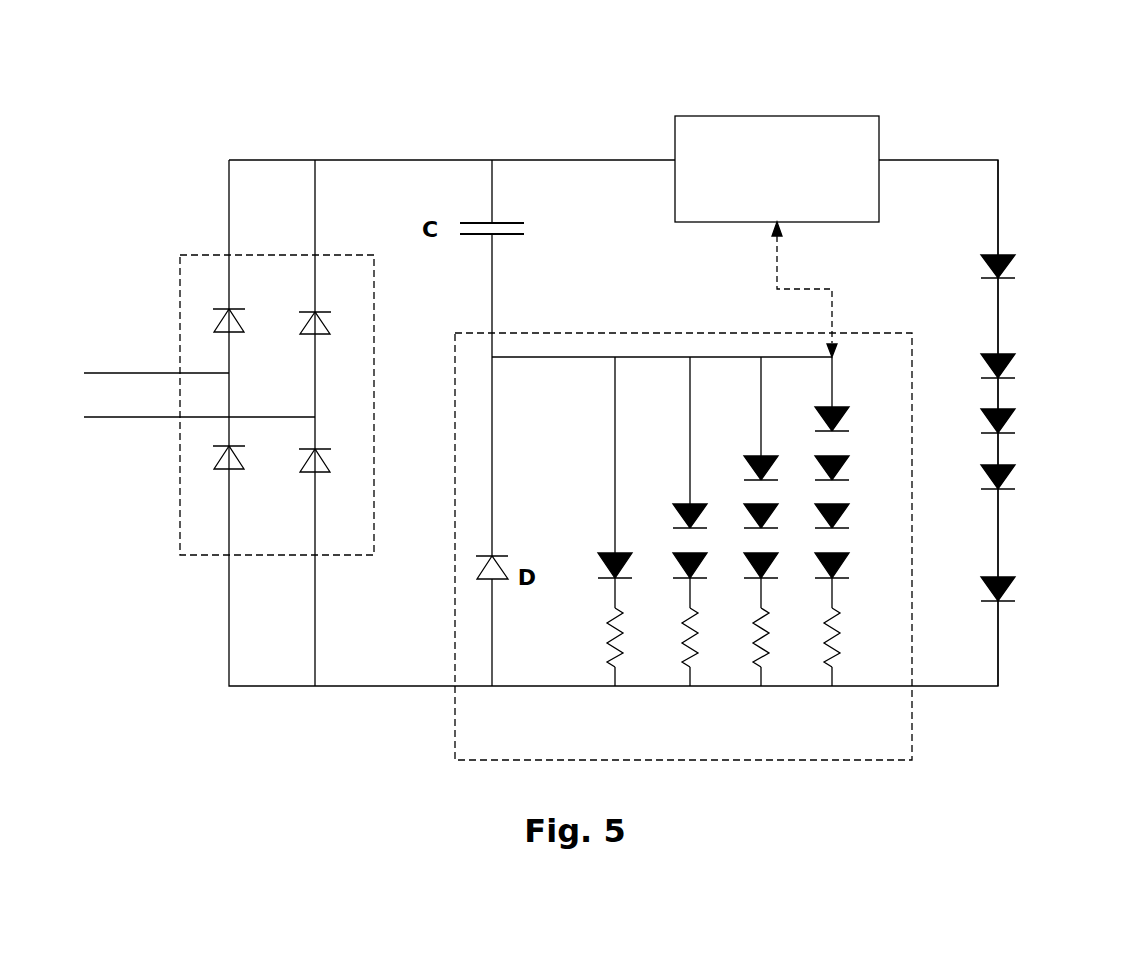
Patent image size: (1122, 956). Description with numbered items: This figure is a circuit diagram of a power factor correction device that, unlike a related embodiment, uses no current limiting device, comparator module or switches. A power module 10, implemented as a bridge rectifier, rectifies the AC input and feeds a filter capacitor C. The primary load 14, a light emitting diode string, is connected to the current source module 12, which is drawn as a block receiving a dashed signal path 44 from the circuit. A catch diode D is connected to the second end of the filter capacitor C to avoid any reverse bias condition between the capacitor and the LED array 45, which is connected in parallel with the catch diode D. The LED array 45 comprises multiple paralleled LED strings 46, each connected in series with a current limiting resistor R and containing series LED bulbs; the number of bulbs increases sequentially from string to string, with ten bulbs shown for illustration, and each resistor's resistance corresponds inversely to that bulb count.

The power module 10 is at (363, 420).
The current source module 12 is at (852, 129).
The primary load 14 is at (1019, 219).
The control signal 44 is at (783, 288).
The LED array 45 is at (709, 527).
The LED string 46 is at (590, 486).